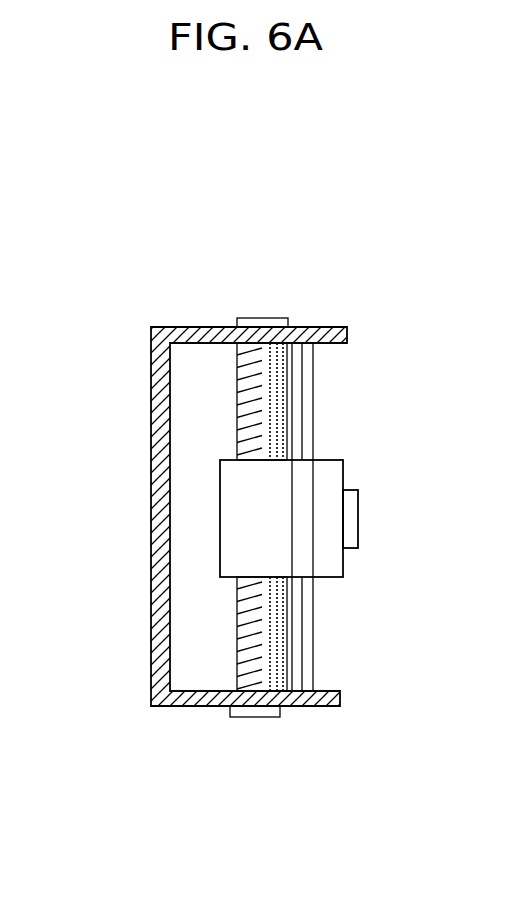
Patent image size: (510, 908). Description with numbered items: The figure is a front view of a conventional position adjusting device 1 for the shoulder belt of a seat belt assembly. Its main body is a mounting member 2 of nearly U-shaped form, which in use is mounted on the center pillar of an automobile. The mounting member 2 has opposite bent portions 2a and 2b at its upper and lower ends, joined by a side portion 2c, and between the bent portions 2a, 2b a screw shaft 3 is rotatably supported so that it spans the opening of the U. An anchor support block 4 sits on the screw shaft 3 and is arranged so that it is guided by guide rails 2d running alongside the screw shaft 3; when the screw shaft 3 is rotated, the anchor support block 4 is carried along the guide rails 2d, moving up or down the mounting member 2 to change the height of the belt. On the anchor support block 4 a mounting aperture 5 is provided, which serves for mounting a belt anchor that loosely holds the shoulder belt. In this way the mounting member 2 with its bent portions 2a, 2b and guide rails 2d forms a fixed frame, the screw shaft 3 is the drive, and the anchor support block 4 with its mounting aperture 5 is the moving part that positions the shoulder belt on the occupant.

The position adjusting device 1 is at (136, 476).
The mounting member 2 is at (213, 501).
The bent portion 2a is at (319, 327).
The bent portion 2b is at (317, 707).
The side wall of frame 2c is at (150, 608).
The guide rail 2d is at (313, 622).
The screw shaft 3 is at (313, 424).
The anchor support block 4 is at (278, 558).
The mounting aperture 5 is at (360, 507).